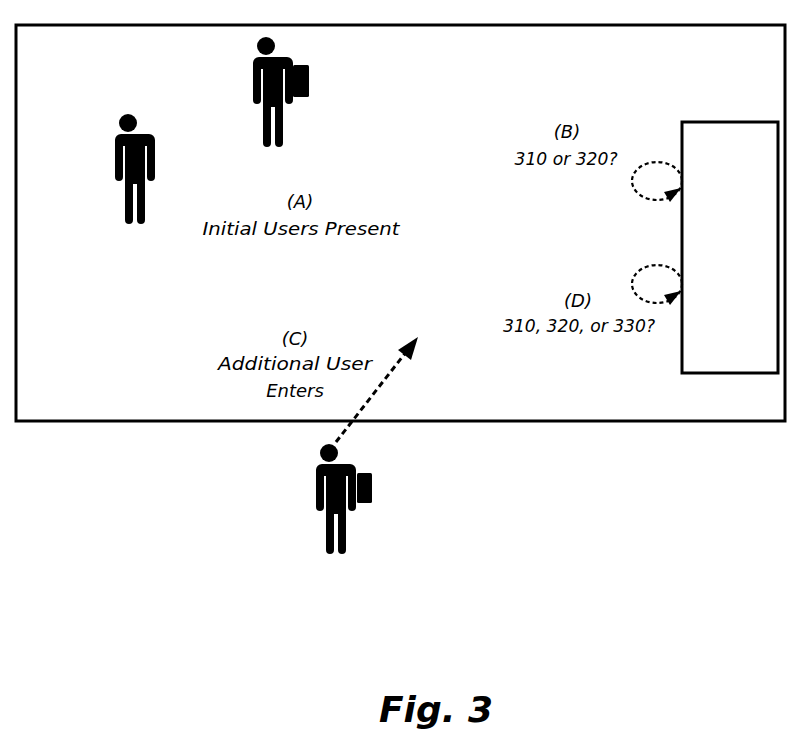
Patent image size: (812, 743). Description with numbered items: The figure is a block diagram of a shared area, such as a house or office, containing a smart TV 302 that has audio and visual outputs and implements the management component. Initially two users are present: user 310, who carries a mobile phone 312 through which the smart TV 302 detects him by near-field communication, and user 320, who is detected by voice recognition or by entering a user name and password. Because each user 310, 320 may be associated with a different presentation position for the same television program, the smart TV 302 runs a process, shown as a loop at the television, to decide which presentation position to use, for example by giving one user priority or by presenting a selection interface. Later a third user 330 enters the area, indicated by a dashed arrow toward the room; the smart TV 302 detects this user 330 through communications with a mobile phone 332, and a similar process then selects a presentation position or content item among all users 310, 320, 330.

The smart TV 302 is at (689, 122).
The user 310 is at (246, 78).
The mobile phone 312 is at (301, 97).
The user 320 is at (111, 135).
The third user 330 is at (320, 548).
The mobile phone 332 is at (364, 503).